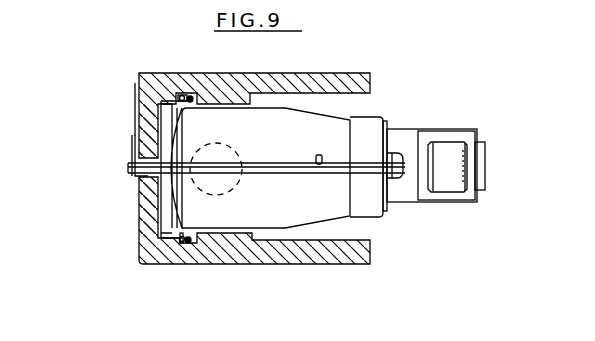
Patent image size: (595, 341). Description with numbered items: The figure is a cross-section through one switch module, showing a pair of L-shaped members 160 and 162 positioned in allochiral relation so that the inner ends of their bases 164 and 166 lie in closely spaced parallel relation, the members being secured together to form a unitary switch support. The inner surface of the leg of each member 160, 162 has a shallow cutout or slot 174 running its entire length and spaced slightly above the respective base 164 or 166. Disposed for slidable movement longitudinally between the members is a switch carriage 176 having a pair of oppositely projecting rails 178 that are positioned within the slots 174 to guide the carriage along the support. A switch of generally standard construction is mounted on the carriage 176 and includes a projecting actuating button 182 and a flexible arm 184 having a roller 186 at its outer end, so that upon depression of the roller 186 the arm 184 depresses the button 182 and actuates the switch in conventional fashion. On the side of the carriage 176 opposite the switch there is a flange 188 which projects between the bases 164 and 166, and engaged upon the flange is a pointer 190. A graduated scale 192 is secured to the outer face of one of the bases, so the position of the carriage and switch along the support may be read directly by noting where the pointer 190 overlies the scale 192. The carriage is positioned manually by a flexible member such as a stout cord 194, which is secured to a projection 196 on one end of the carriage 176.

The L-shaped member 160 is at (283, 84).
The L-shaped member 162 is at (303, 255).
The base 164 is at (146, 134).
The base 166 is at (148, 208).
The slot 174 is at (190, 98).
The switch carriage 176 is at (330, 121).
The rail 178 is at (180, 98).
The actuating button 182 is at (396, 186).
The flexible arm 184 is at (407, 139).
The roller 186 is at (473, 164).
The flange 188 is at (131, 167).
The pointer 190 is at (132, 152).
The graduated scale 192 is at (133, 110).
The cord 194 is at (311, 162).
The projection 196 is at (245, 172).